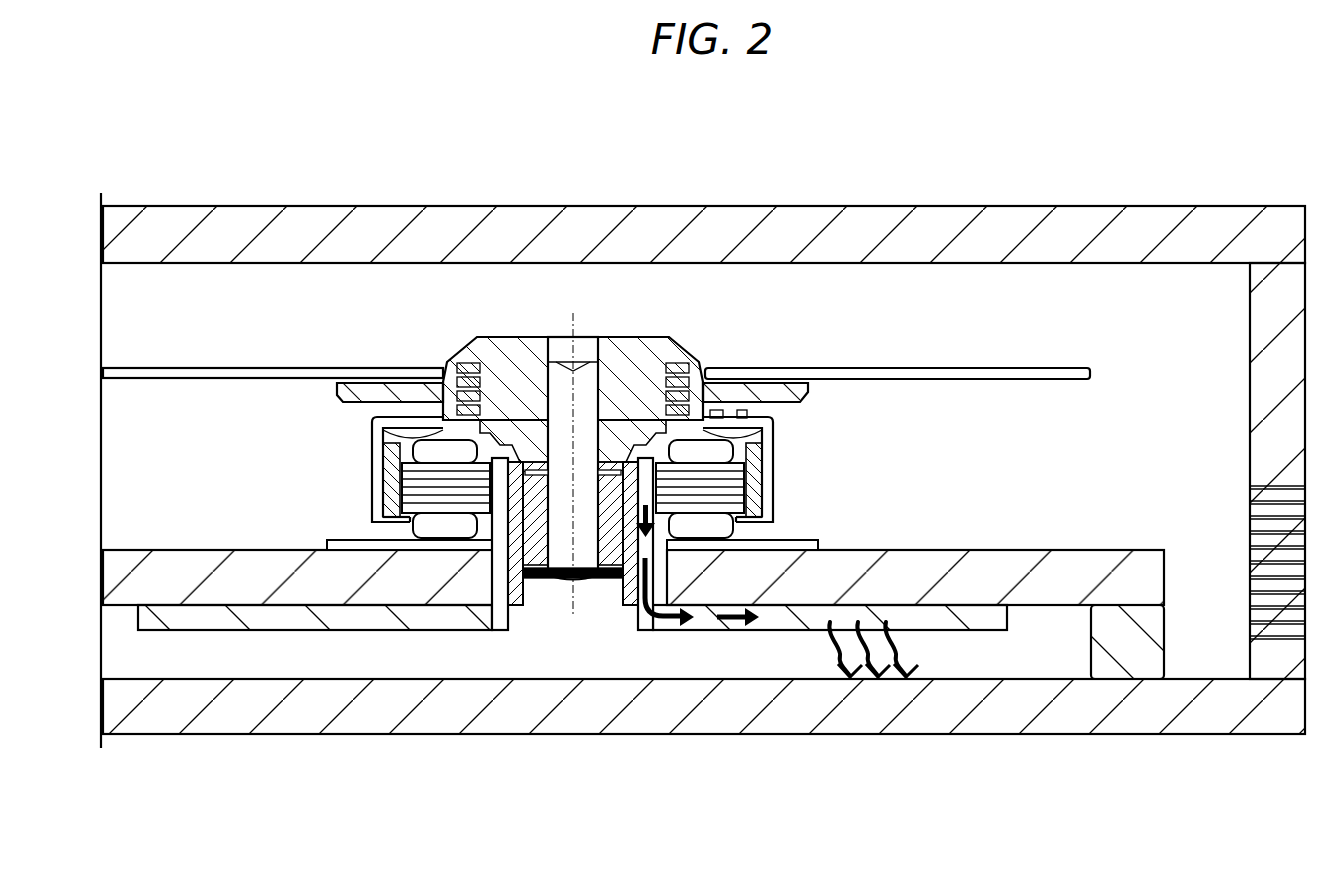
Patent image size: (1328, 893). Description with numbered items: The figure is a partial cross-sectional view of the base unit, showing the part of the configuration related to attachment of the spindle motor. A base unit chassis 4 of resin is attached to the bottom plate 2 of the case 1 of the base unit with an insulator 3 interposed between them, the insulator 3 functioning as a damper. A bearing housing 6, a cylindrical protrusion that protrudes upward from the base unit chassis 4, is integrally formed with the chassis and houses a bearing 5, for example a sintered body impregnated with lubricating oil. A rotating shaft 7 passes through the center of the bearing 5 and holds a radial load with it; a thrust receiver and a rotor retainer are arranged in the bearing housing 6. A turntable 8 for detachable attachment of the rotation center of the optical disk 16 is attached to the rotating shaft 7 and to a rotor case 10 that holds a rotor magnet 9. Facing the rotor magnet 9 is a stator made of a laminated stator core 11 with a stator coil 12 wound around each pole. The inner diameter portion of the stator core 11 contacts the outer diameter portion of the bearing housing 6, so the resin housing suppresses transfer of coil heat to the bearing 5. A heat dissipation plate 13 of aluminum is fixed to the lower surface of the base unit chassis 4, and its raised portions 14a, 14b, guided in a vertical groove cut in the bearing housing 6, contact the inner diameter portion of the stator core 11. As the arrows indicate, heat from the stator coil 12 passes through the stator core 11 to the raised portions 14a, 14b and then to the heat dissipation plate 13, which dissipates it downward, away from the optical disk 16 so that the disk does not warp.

The case 1 is at (1160, 216).
The bottom plate 2 is at (1210, 727).
The insulator 3 is at (1131, 660).
The base unit chassis 4 is at (1050, 593).
The bearing 5 is at (614, 562).
The bearing housing 6 is at (540, 580).
The rotating shaft 7 is at (585, 388).
The turntable 8 is at (738, 383).
The rotor magnet 9 is at (391, 500).
The rotor case 10 is at (378, 495).
The stator core 11 is at (718, 520).
The stator coil 12 is at (712, 500).
The heat dissipation plate 13 is at (960, 618).
The raised portion 14a is at (494, 500).
The raised portion 14b is at (658, 633).
The optical disk 16 is at (998, 372).